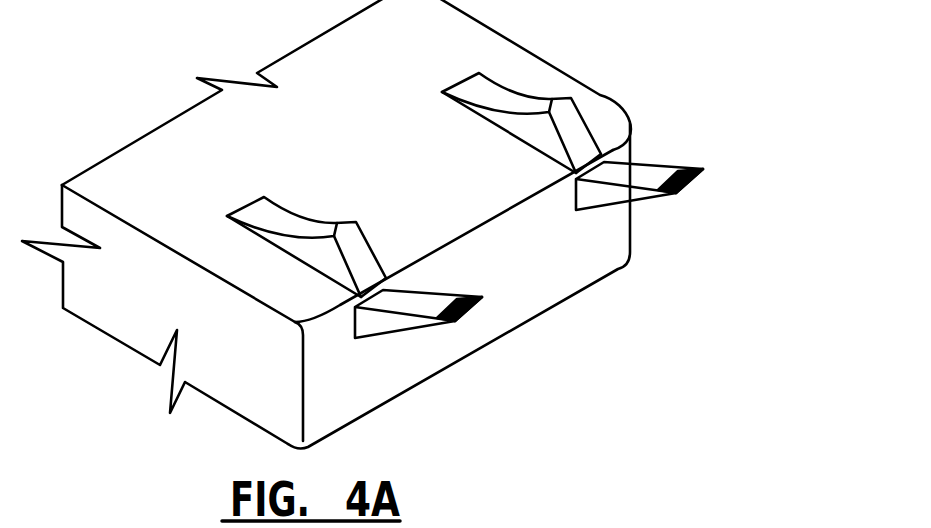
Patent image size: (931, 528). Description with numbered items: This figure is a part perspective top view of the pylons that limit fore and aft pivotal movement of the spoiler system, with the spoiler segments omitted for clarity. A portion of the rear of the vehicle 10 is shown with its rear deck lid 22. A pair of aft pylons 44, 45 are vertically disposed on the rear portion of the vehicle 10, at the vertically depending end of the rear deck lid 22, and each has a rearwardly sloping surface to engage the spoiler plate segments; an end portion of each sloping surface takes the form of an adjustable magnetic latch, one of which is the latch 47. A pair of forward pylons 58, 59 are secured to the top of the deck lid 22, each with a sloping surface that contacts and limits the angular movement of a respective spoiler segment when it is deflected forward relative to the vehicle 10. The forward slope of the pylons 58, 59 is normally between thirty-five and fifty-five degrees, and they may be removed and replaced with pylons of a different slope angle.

The vehicle 10 is at (366, 224).
The rear deck lid 22 is at (346, 161).
The aft pylon 44 is at (701, 205).
The aft pylon 45 is at (398, 330).
The adjustable magnetic latch 47 is at (478, 297).
The forward pylon 58 is at (550, 95).
The forward pylon 59 is at (332, 222).